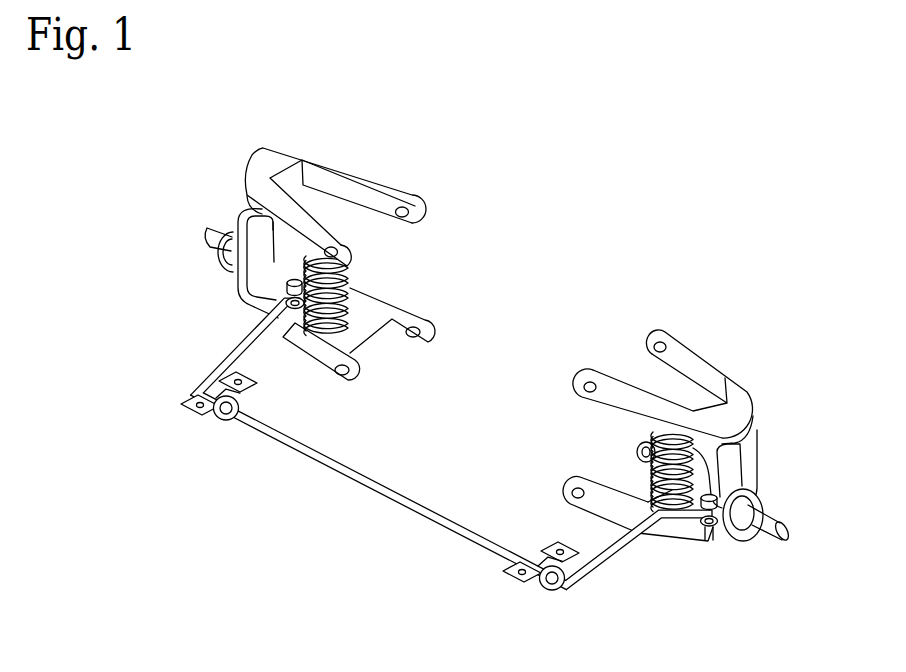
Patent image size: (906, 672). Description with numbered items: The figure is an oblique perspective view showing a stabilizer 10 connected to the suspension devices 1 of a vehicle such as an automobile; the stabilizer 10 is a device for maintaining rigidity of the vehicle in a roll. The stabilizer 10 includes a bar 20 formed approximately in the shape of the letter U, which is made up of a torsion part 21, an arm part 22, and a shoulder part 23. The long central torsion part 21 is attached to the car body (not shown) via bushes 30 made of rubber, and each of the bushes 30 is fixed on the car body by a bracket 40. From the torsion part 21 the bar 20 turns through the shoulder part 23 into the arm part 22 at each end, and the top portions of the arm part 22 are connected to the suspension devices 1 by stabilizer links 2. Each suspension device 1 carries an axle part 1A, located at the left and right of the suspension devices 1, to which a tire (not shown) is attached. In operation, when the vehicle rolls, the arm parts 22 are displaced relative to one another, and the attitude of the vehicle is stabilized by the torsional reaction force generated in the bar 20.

The suspension device 1 is at (331, 158).
The axle part 1A is at (208, 233).
The stabilizer link 2 is at (293, 308).
The stabilizer 10 is at (430, 472).
The bar 20 is at (430, 472).
The torsion part 21 is at (372, 485).
The arm part 22 is at (240, 350).
The shoulder part 23 is at (193, 390).
The bush 30 is at (213, 421).
The bracket 40 is at (185, 408).